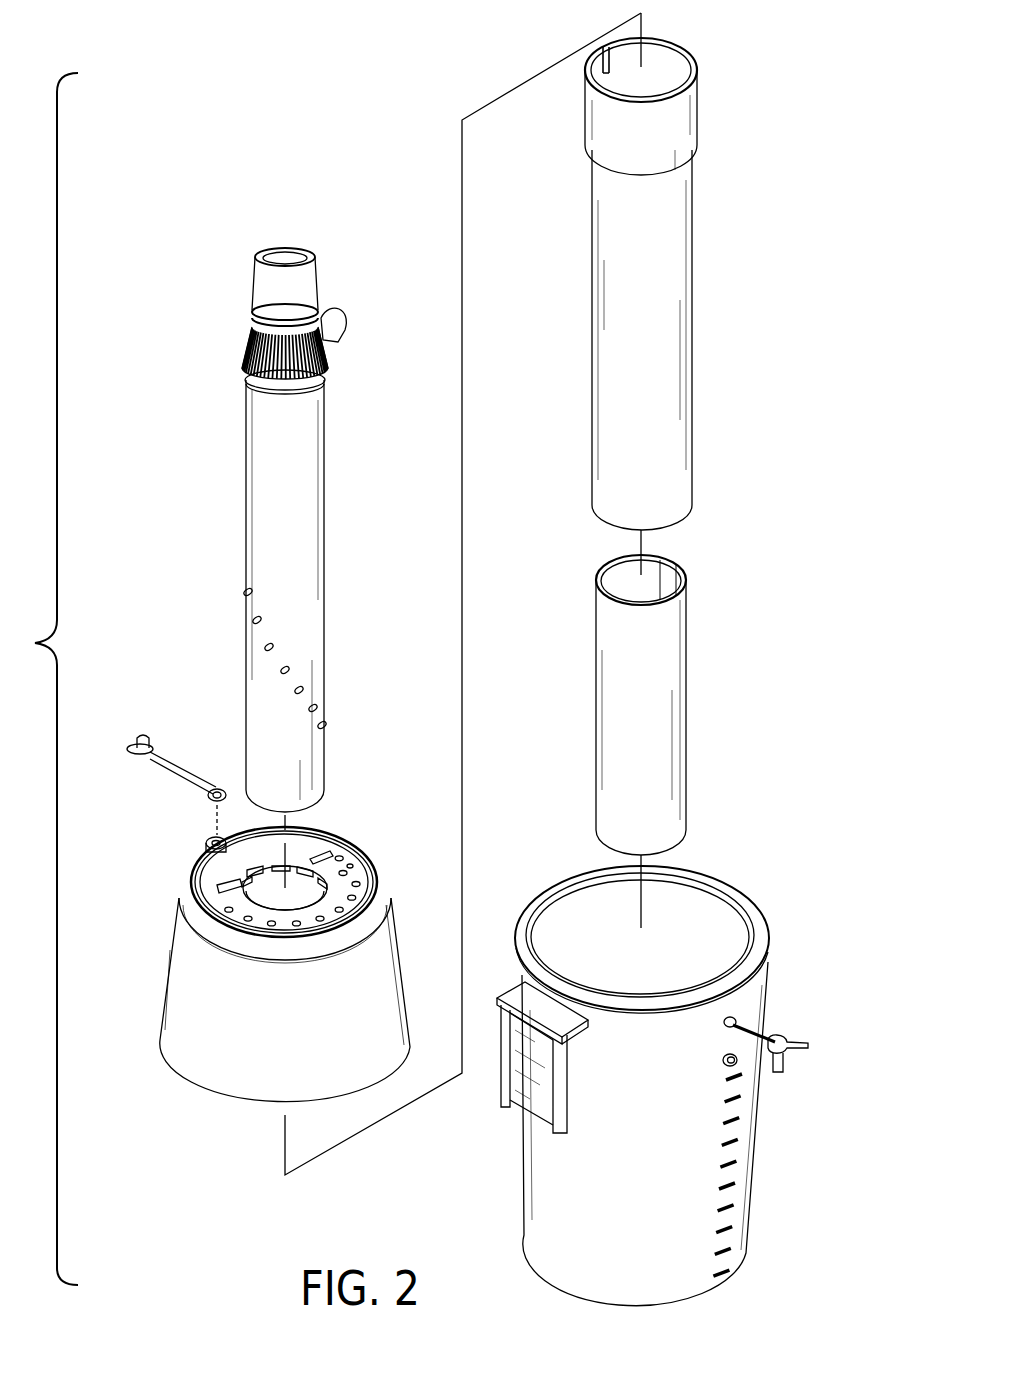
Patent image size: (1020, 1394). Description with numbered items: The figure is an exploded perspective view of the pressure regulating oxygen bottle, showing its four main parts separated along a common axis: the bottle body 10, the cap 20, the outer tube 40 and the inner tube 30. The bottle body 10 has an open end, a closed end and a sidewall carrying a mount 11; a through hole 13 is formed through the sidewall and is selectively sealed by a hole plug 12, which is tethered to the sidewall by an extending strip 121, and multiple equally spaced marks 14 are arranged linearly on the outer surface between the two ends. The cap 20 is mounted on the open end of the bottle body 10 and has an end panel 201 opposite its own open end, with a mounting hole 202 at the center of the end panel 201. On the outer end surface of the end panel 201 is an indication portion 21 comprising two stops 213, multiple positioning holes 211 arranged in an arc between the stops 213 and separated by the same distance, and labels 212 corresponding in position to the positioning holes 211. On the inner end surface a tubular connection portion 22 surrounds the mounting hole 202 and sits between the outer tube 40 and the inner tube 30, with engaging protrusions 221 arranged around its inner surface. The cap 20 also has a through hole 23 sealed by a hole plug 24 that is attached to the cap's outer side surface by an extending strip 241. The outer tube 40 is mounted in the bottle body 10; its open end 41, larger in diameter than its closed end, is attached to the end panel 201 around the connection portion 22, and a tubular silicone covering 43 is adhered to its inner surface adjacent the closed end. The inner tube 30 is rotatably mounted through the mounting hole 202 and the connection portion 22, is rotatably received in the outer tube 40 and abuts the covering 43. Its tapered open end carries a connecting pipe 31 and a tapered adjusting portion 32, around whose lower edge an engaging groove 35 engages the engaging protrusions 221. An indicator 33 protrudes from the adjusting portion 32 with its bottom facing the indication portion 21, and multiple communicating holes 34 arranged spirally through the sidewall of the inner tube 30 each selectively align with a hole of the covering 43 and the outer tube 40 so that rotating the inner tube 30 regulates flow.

The bottle body 10 is at (575, 1180).
The mount 11 is at (530, 1093).
The hole plug 12 is at (782, 1040).
The extending strip 121 is at (745, 1030).
The through hole 13 is at (740, 1065).
The marks 14 is at (740, 1163).
The cap 20 is at (168, 986).
The end panel 201 is at (223, 873).
The mounting hole 202 is at (293, 905).
The indication portion 21 is at (327, 913).
The positioning holes 211 is at (343, 870).
The labels 212 is at (352, 866).
The stops 213 is at (318, 857).
The connection portion 22 is at (237, 892).
The engaging protrusions 221 is at (258, 867).
The through hole 23 is at (208, 845).
The hole plug 24 is at (127, 752).
The extending strip 241 is at (172, 778).
The inner tube 30 is at (257, 478).
The connecting pipe 31 is at (305, 292).
The adjusting portion 32 is at (245, 348).
The indicator 33 is at (345, 325).
The communicating holes 34 is at (255, 622).
The engaging groove 35 is at (293, 390).
The outer tube 40 is at (680, 297).
The open end 41 is at (680, 128).
The covering 43 is at (675, 697).